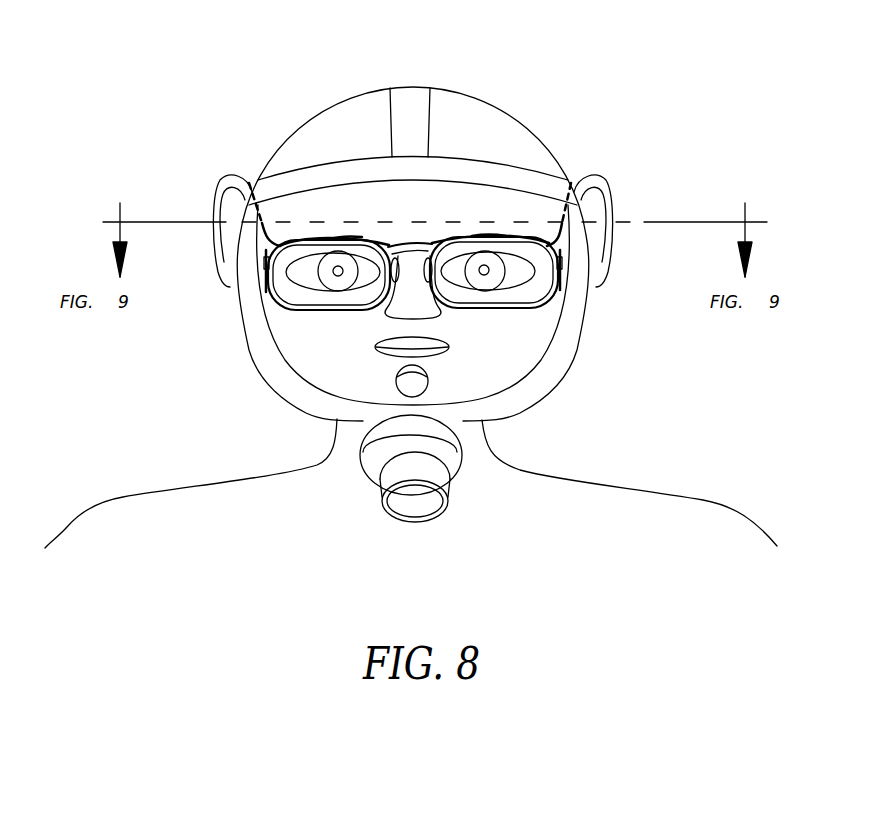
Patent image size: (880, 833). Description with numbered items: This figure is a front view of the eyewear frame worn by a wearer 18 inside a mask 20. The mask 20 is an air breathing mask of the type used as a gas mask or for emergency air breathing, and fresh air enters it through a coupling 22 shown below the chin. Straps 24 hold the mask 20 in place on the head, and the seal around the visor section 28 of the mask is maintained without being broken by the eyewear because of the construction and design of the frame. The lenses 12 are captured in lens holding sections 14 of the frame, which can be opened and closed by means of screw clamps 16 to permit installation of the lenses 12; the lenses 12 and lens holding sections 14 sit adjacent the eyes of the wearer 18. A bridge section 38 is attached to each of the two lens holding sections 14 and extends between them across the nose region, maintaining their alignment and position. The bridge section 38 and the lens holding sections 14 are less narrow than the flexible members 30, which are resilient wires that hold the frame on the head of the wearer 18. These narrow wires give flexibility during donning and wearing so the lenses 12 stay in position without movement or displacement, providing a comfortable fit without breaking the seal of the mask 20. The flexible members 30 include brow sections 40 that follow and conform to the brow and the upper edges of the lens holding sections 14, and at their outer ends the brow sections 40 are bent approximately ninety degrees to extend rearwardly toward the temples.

The lenses 12 is at (350, 298).
The lens holding sections 14 is at (301, 308).
The screw clamps 16 is at (266, 271).
The wearer 18 is at (499, 374).
The mask 20 is at (544, 381).
The coupling 22 is at (470, 465).
The straps 24 is at (416, 103).
The visor section 28 is at (563, 308).
The flexible members 30 is at (284, 238).
The bridge section 38 is at (418, 244).
The brow sections 40 is at (343, 239).